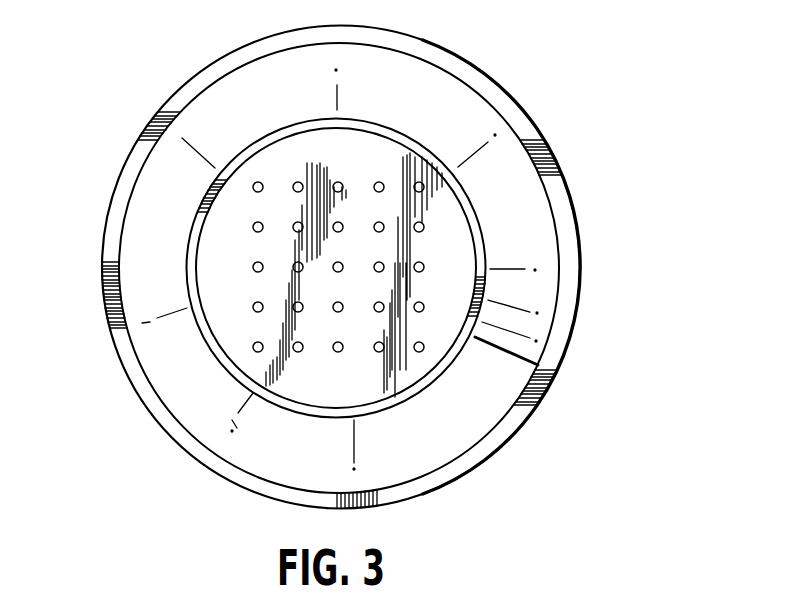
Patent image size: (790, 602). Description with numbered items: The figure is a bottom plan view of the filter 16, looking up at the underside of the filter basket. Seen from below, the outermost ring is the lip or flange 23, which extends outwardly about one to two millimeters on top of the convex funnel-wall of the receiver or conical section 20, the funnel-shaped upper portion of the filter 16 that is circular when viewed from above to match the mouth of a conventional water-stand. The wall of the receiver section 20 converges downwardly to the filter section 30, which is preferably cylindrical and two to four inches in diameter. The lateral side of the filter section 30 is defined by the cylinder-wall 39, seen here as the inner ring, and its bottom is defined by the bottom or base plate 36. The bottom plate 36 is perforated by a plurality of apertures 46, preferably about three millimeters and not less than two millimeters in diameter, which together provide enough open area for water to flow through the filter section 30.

The filter 16 is at (580, 343).
The lip or flange 23 is at (517, 102).
The cylinder-wall 39 is at (487, 250).
The filter section 30 is at (452, 370).
The receiver or conical section 20 is at (543, 303).
The apertures 46 is at (344, 182).
The bottom or base plate 36 is at (406, 160).